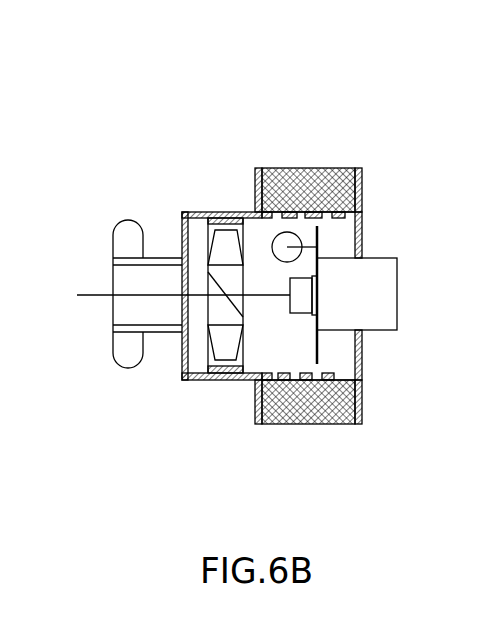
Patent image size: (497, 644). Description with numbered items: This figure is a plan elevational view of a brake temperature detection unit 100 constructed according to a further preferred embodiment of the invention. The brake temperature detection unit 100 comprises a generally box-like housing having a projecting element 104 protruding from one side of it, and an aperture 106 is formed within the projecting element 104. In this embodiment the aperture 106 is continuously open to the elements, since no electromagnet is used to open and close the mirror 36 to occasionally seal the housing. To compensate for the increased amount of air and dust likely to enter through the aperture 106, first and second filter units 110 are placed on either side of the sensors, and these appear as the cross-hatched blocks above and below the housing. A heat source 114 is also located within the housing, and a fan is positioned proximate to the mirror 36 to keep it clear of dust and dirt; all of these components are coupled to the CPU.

The brake temperature detection unit 100 is at (317, 62).
The projecting element 104 is at (165, 250).
The aperture 106 is at (112, 278).
The filter units 110 is at (313, 168).
The heat source 114 is at (288, 232).
The mirror 36 is at (243, 305).